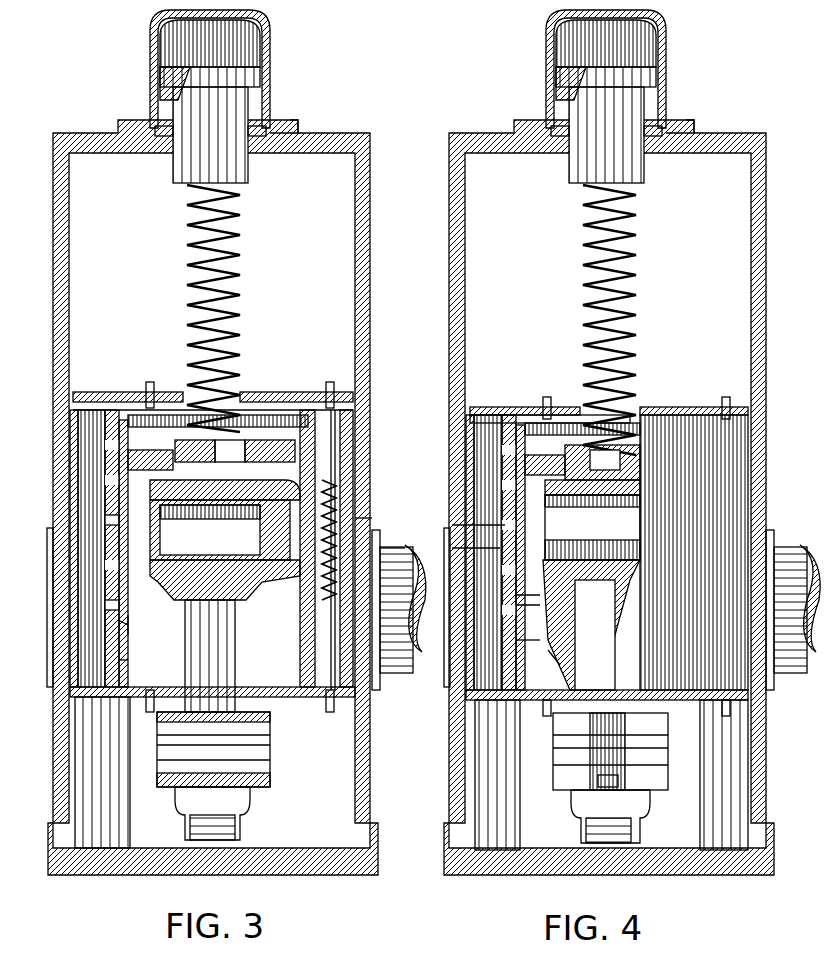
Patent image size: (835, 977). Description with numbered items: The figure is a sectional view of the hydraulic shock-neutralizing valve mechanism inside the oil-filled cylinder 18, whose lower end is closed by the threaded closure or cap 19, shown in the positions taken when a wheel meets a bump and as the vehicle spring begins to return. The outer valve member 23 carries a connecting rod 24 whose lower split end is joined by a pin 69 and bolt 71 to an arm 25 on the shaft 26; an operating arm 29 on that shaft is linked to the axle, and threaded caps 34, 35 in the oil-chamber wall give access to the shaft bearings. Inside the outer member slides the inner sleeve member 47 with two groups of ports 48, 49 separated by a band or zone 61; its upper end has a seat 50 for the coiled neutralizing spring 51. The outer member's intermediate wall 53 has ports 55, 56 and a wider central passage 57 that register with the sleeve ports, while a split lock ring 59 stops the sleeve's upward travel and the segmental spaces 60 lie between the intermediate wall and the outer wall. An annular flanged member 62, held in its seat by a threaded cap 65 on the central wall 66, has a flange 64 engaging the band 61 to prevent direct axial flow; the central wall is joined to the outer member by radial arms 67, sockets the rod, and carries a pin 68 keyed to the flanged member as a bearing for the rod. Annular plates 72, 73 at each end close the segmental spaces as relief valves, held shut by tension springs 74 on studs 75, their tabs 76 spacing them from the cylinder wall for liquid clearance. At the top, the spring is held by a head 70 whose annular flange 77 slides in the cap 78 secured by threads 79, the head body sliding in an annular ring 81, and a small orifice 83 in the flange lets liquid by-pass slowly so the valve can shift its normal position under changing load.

In FIG. 3, the cylinder 18 is at (372, 812).
In FIG. 4, the cylinder 18 is at (765, 790).
In FIG. 3, the closure or cap 19 is at (330, 868).
In FIG. 4, the closure or cap 19 is at (712, 868).
In FIG. 3, the outer valve member 23 is at (357, 460).
In FIG. 4, the outer valve member 23 is at (702, 500).
In FIG. 3, the connecting rod 24 is at (210, 656).
In FIG. 4, the connecting rod 24 is at (617, 585).
In FIG. 3, the arm 25 is at (250, 822).
In FIG. 4, the arm 25 is at (575, 822).
In FIG. 3, the shaft 26 is at (418, 654).
In FIG. 3, the operating arm 29 is at (393, 675).
In FIG. 4, the operating arm 29 is at (787, 675).
In FIG. 3, the threaded cap 34 is at (50, 680).
In FIG. 4, the threaded cap 34 is at (447, 607).
In FIG. 3, the threaded cap 35 is at (380, 690).
In FIG. 4, the threaded cap 35 is at (770, 690).
In FIG. 3, the inner sleeve member 47 is at (120, 622).
In FIG. 4, the inner sleeve member 47 is at (522, 652).
In FIG. 3, the ports 48 is at (132, 488).
In FIG. 4, the ports 48 is at (527, 490).
In FIG. 4, the ports 49 is at (522, 600).
In FIG. 3, the seat 50 is at (238, 440).
In FIG. 4, the seat 50 is at (630, 462).
In FIG. 3, the neutralizing spring 51 is at (243, 300).
In FIG. 4, the neutralizing spring 51 is at (640, 248).
In FIG. 3, the intermediate wall 53 is at (122, 662).
In FIG. 3, the ports 55 is at (108, 478).
In FIG. 4, the ports 55 is at (505, 482).
In FIG. 3, the ports 56 is at (108, 626).
In FIG. 3, the opening or passage 57 is at (105, 520).
In FIG. 3, the split lock ring 59 is at (266, 420).
In FIG. 4, the split lock ring 59 is at (640, 428).
In FIG. 3, the segmental spaces 60 is at (336, 440).
In FIG. 3, the band or zone 61 is at (96, 545).
In FIG. 4, the band or zone 61 is at (607, 695).
In FIG. 3, the annular ring or flanged member 62 is at (375, 519).
In FIG. 4, the annular ring or flanged member 62 is at (455, 521).
In FIG. 3, the flange 64 is at (405, 548).
In FIG. 4, the flange 64 is at (455, 546).
In FIG. 3, the threaded cap 65 is at (210, 482).
In FIG. 4, the threaded cap 65 is at (617, 492).
In FIG. 3, the central wall 66 is at (246, 645).
In FIG. 4, the central wall 66 is at (592, 625).
In FIG. 4, the radial arms or webs 67 is at (562, 662).
In FIG. 3, the pin 68 is at (220, 530).
In FIG. 4, the pin 68 is at (602, 530).
In FIG. 3, the pin 69 is at (213, 749).
In FIG. 4, the pin 69 is at (670, 750).
In FIG. 3, the head 70 is at (240, 110).
In FIG. 4, the head 70 is at (626, 118).
In FIG. 4, the bolt 71 is at (620, 784).
In FIG. 3, the annular plate 72 is at (100, 392).
In FIG. 4, the annular plate 72 is at (500, 407).
In FIG. 3, the annular plate 73 is at (96, 700).
In FIG. 4, the annular plate 73 is at (500, 700).
In FIG. 3, the tension springs 74 is at (338, 510).
In FIG. 3, the studs 75 is at (150, 382).
In FIG. 4, the studs 75 is at (547, 397).
In FIG. 4, the extensions or tabs 76 is at (678, 407).
In FIG. 3, the annular flange 77 is at (262, 76).
In FIG. 4, the annular flange 77 is at (656, 78).
In FIG. 3, the cap 78 is at (272, 36).
In FIG. 4, the cap 78 is at (668, 40).
In FIG. 3, the threads 79 is at (297, 127).
In FIG. 4, the threads 79 is at (693, 127).
In FIG. 3, the annular ring 81 is at (156, 128).
In FIG. 4, the annular ring 81 is at (552, 128).
In FIG. 3, the orifice 83 is at (168, 80).
In FIG. 4, the orifice 83 is at (564, 80).